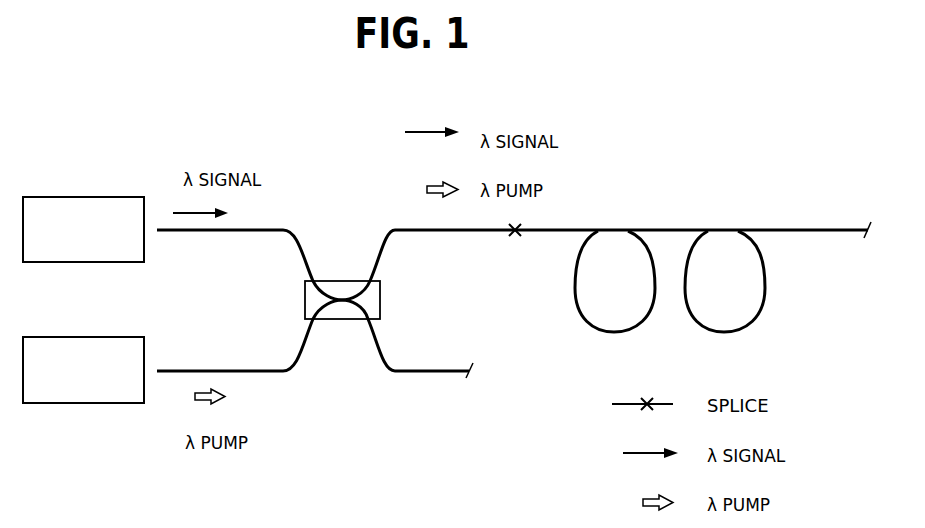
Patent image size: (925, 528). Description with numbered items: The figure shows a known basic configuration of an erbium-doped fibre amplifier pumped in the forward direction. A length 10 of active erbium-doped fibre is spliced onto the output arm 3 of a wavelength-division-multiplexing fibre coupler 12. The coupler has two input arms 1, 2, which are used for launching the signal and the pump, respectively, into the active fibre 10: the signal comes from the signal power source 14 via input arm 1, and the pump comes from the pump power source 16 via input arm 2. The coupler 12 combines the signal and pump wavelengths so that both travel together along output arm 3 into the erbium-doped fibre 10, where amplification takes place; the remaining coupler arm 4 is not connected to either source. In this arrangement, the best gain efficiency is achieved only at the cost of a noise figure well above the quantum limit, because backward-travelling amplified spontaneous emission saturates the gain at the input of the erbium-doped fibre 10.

The signal power source 14 is at (72, 240).
The pump power source 16 is at (72, 383).
The wavelength-division-multiplexing fibre coupler 12 is at (342, 281).
The length of active erbium-doped fibre 10 is at (733, 222).
The input arm 1 is at (220, 244).
The input arm 2 is at (220, 355).
The output arm 3 is at (497, 243).
The WDM coupler port 4 (unused) 4 is at (434, 359).